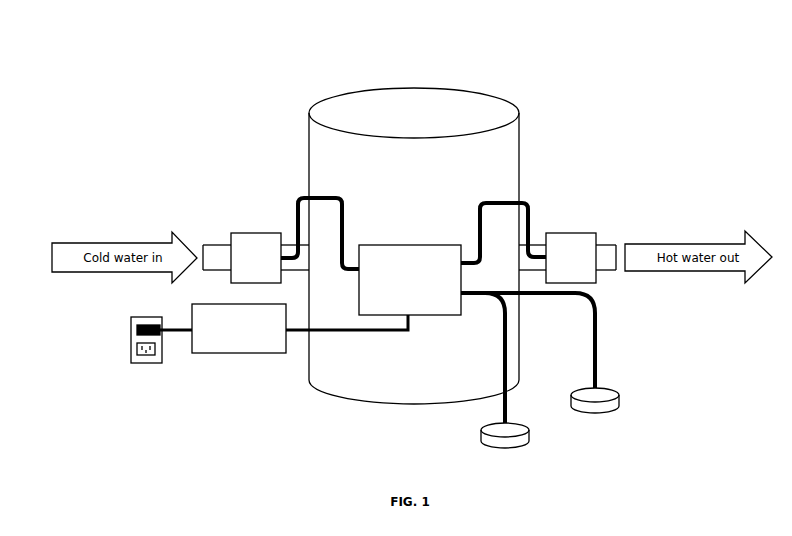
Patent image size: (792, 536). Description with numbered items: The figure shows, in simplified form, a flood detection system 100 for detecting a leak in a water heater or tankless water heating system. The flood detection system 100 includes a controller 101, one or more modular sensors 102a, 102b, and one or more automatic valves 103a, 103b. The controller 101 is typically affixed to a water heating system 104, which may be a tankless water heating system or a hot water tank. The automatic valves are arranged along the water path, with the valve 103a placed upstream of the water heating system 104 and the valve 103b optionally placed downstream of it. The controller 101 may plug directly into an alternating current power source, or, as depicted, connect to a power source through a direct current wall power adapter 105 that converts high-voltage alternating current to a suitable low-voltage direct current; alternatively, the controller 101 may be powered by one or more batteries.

The flood detection system 100 is at (243, 82).
The controller 101 is at (413, 256).
The modular sensor 102a is at (613, 385).
The modular sensor 102b is at (477, 438).
The automatic valve 103a is at (256, 258).
The automatic valve 103b is at (571, 258).
The water heating system 104 is at (414, 246).
The direct current wall power adapter 105 is at (269, 333).